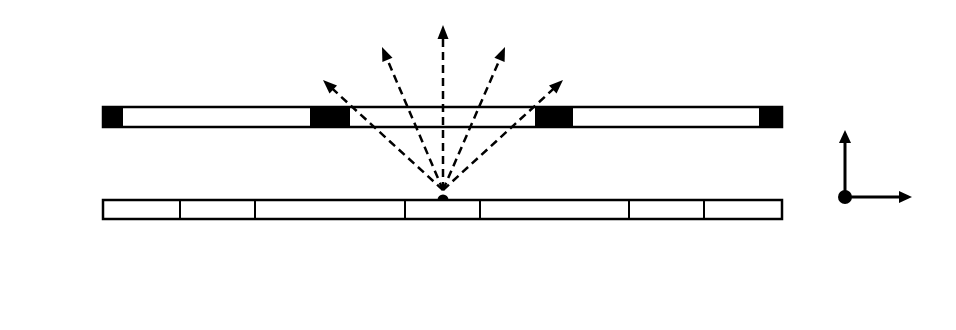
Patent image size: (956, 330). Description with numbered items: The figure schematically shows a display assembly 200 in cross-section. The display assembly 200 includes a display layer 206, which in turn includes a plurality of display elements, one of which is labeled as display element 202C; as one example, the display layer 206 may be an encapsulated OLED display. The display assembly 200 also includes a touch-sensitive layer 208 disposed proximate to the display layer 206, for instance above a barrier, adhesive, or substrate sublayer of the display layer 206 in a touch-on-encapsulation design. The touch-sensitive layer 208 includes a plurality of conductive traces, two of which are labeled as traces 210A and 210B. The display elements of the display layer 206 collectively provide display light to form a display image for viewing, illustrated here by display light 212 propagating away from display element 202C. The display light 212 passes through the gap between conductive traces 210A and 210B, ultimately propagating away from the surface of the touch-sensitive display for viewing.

The display assembly 200 is at (216, 59).
The touch-sensitive layer 208 is at (80, 112).
The conductive trace 210A is at (330, 126).
The conductive trace 210B is at (555, 126).
The display layer 206 is at (78, 207).
The display element 202C is at (443, 221).
The display light 212 is at (370, 167).